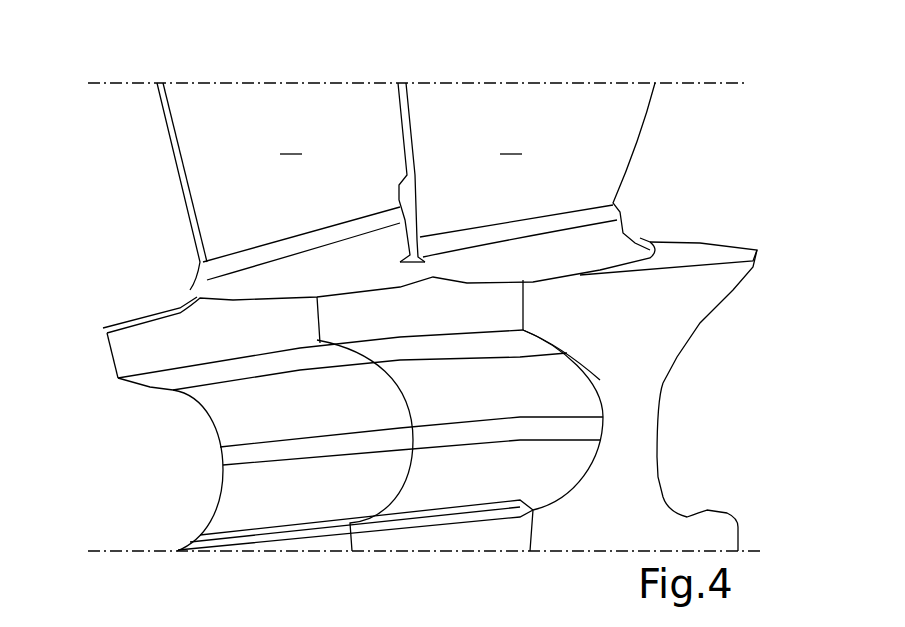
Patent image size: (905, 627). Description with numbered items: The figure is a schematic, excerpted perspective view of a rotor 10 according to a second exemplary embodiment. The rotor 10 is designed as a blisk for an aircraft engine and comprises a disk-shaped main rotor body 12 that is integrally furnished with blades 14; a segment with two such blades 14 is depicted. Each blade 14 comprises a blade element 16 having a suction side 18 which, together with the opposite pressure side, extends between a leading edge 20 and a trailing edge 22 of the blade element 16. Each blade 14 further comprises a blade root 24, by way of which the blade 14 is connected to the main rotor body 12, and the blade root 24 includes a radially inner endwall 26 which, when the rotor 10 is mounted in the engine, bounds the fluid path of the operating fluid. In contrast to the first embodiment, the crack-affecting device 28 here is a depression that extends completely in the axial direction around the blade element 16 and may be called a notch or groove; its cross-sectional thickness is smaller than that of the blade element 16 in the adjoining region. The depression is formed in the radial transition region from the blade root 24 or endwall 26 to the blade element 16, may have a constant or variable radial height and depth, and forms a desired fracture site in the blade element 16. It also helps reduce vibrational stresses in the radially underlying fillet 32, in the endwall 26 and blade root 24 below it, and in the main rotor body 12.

The rotor 10 is at (116, 59).
The main rotor body 12 is at (640, 497).
The blade 14 is at (114, 175).
The blade element 16 is at (608, 132).
The suction side 18 is at (404, 142).
The leading edge 20 is at (193, 215).
The trailing edge 22 is at (400, 183).
The blade root 24 is at (129, 397).
The radially inner endwall 26 is at (147, 350).
The crack-affecting device 28 is at (191, 278).
The fillet 32 is at (233, 292).